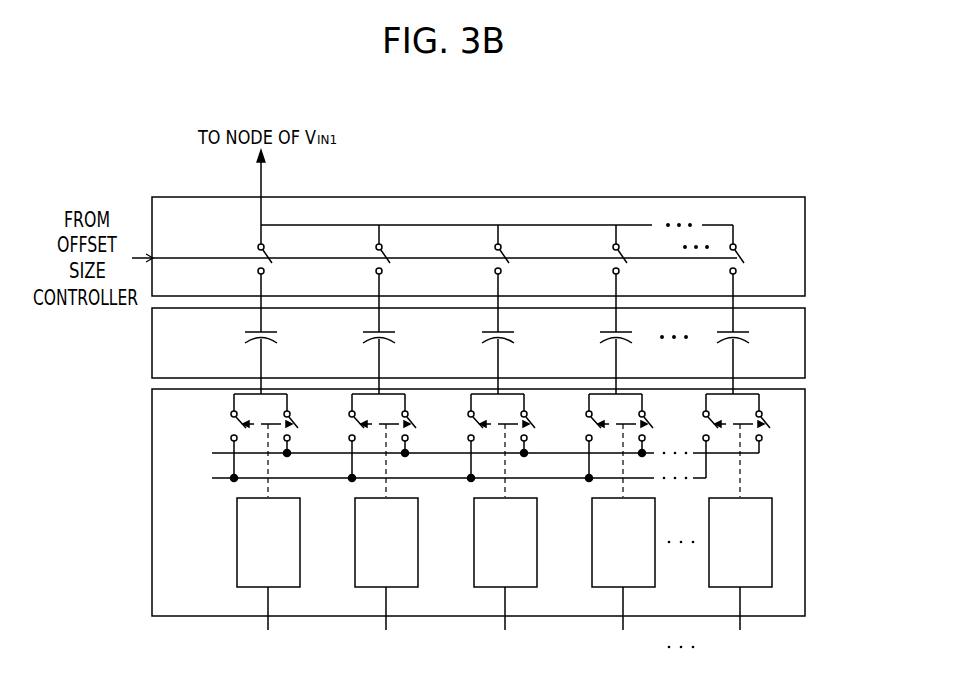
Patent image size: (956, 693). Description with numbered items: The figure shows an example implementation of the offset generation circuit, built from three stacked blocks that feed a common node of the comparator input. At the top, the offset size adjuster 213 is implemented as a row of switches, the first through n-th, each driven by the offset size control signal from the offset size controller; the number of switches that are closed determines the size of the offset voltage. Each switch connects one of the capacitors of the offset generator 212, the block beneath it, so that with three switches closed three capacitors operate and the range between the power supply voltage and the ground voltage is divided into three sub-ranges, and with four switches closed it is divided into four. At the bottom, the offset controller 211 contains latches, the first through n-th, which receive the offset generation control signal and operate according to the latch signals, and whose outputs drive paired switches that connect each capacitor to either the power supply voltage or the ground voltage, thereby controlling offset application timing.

The offset controller 211 is at (805, 502).
The offset generator 212 is at (805, 343).
The offset size adjuster 213 is at (805, 265).